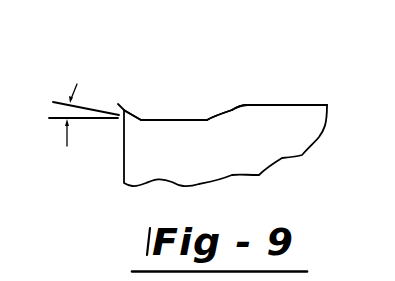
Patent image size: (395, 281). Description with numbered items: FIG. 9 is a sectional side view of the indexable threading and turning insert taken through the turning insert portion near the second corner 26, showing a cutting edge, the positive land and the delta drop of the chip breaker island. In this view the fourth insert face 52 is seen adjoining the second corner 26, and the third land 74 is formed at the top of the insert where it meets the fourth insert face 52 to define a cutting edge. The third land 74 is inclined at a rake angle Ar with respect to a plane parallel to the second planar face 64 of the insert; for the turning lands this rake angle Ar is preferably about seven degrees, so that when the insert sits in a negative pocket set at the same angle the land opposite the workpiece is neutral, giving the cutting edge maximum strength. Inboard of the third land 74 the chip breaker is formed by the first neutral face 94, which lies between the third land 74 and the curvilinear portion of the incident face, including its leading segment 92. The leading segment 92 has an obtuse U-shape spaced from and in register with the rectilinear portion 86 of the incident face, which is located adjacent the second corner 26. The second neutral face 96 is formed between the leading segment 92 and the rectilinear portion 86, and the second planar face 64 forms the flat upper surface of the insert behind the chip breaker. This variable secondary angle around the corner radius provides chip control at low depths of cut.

The second corner 26 is at (124, 152).
The fourth insert face 52 is at (121, 106).
The third land 74 is at (134, 117).
The first neutral face 94 is at (165, 120).
The leading segment 92 is at (207, 119).
The second neutral face 96 is at (214, 117).
The rectilinear portion 86 is at (231, 110).
The second planar face 64 is at (295, 106).
The rake angle Ar is at (60, 107).